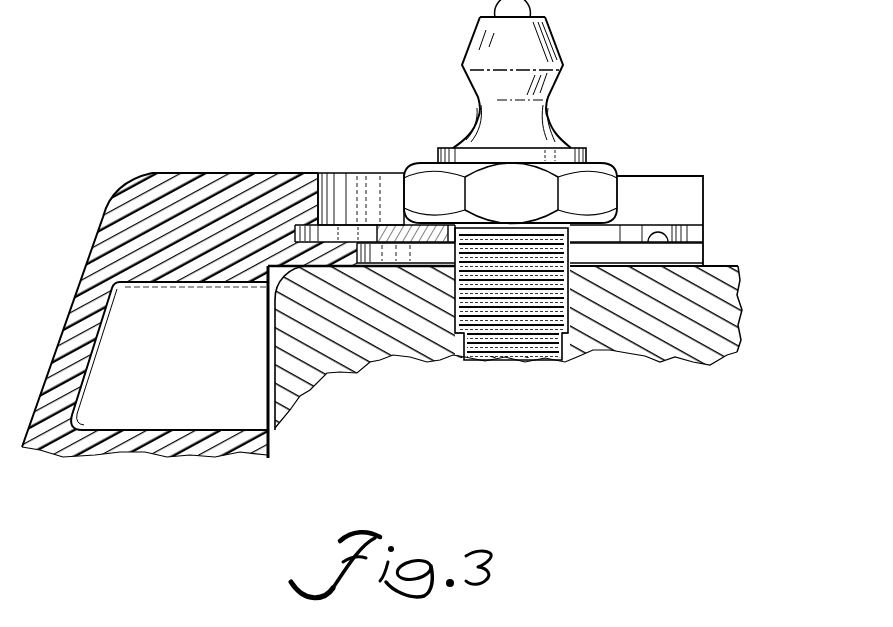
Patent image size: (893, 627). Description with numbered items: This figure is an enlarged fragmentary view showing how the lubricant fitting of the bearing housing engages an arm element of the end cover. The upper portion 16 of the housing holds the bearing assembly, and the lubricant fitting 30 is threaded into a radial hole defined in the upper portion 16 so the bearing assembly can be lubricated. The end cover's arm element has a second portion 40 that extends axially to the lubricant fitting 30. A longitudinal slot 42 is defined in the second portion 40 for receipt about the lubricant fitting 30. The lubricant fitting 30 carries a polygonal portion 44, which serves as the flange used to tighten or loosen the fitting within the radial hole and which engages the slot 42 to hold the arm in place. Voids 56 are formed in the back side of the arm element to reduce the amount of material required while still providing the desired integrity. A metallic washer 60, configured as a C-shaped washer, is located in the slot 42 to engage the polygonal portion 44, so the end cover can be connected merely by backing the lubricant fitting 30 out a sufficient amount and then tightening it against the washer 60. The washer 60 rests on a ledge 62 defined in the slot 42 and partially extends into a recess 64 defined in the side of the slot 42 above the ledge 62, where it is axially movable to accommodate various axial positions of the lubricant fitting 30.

The upper portion 16 is at (720, 265).
The lubricant fitting 30 is at (557, 30).
The second portion 40 is at (231, 172).
The longitudinal slot 42 is at (354, 172).
The polygonal portion 44 is at (592, 177).
The voids 56 is at (248, 384).
The metallic washer 60 is at (397, 224).
The ledge 62 is at (702, 202).
The recess 64 is at (663, 233).